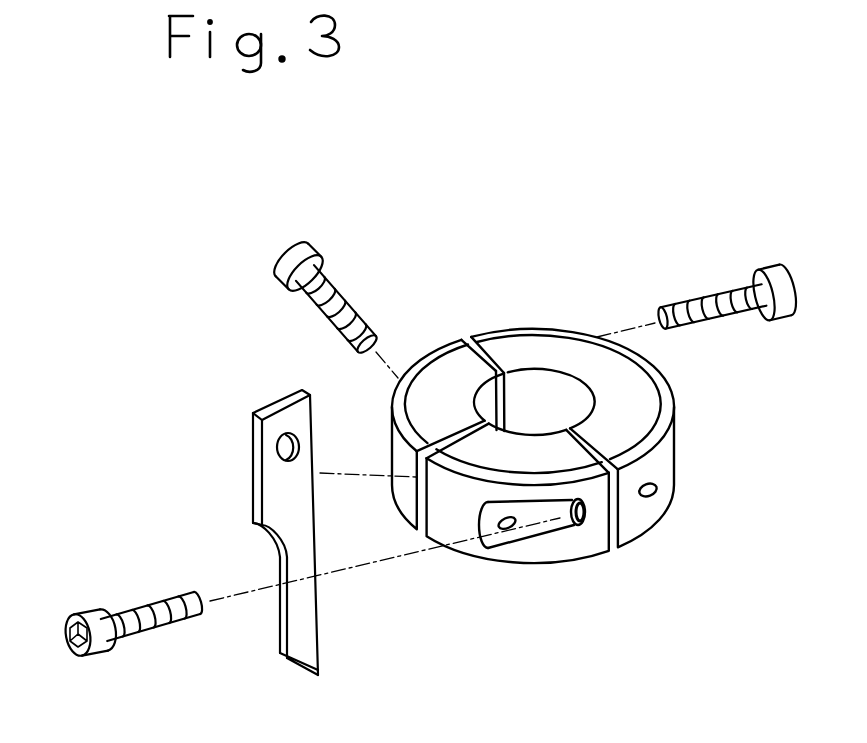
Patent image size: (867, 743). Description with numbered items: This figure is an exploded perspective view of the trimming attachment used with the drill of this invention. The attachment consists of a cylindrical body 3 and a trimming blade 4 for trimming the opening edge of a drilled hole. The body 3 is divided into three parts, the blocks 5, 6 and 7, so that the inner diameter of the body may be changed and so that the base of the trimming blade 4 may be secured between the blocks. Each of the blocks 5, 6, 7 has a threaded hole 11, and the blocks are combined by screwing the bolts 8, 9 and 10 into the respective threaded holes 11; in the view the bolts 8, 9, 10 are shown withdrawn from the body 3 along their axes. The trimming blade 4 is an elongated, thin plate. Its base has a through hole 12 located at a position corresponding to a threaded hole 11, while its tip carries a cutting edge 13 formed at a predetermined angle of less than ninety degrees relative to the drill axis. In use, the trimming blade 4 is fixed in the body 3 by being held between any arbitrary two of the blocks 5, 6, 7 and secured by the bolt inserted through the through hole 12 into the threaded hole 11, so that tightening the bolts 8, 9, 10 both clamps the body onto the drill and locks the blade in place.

The cylindrical body 3 is at (565, 464).
The trimming blade 4 is at (256, 565).
The block 5 is at (448, 364).
The block 6 is at (530, 562).
The block 7 is at (642, 383).
The bolt 8 is at (307, 248).
The bolt 9 is at (75, 654).
The bolt 10 is at (780, 283).
The threaded hole 11 is at (500, 523).
The through hole 12 is at (281, 448).
The cutting edge 13 is at (297, 673).